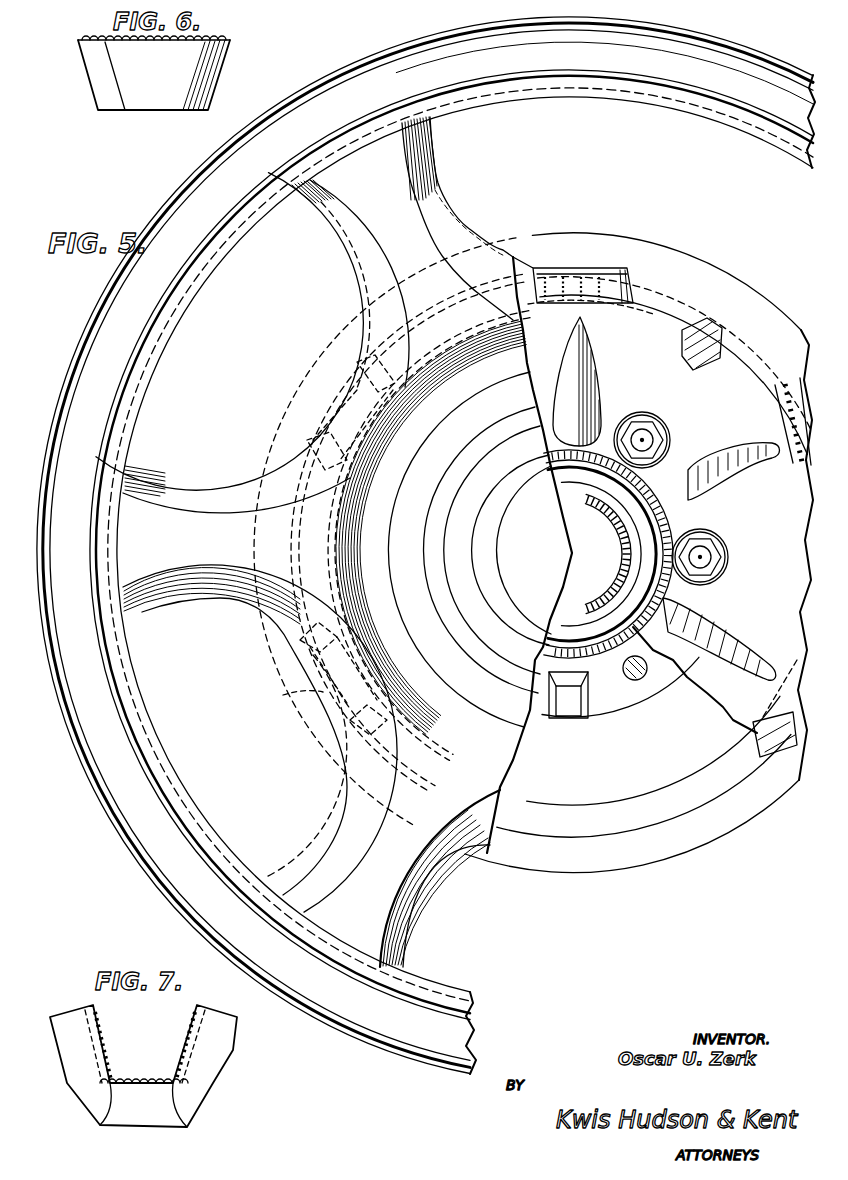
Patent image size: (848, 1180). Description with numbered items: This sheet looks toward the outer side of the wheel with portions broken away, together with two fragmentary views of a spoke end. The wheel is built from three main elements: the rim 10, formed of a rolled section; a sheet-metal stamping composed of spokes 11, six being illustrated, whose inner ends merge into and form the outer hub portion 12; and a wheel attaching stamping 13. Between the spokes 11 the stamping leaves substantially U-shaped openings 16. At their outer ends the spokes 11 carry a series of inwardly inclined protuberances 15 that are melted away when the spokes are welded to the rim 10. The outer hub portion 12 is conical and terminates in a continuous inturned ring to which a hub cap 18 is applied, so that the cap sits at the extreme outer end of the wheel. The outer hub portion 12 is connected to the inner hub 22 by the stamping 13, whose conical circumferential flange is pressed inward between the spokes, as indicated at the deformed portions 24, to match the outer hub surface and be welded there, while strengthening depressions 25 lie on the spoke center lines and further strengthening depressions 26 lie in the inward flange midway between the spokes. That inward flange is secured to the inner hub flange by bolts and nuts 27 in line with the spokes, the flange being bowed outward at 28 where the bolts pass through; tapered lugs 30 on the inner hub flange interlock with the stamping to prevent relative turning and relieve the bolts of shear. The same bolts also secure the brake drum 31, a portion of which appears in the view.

In FIG. 5, the rim 10 is at (676, 97).
In FIG. 5, the spokes 11 is at (377, 223).
In FIG. 6, the spokes 11 is at (152, 106).
In FIG. 7, the spokes 11 is at (145, 1112).
In FIG. 5, the outer hub portion 12 is at (355, 410).
In FIG. 5, the wheel attaching stamping 13 is at (675, 478).
In FIG. 6, the protuberances 15 is at (224, 40).
In FIG. 7, the protuberances 15 is at (78, 1040).
In FIG. 5, the U-shaped openings 16 is at (349, 533).
In FIG. 5, the hub cap 18 is at (527, 650).
In FIG. 5, the inner hub 22 is at (620, 502).
In FIG. 5, the deformed portions 24 is at (590, 275).
In FIG. 5, the strengthening depressions 25 is at (690, 352).
In FIG. 5, the strengthening depressions 26 is at (595, 372).
In FIG. 5, the bolts and nuts 27 is at (650, 430).
In FIG. 5, the bowed portions 28 is at (672, 443).
In FIG. 5, the tapered lugs 30 is at (572, 710).
In FIG. 5, the brake drum 31 is at (714, 272).